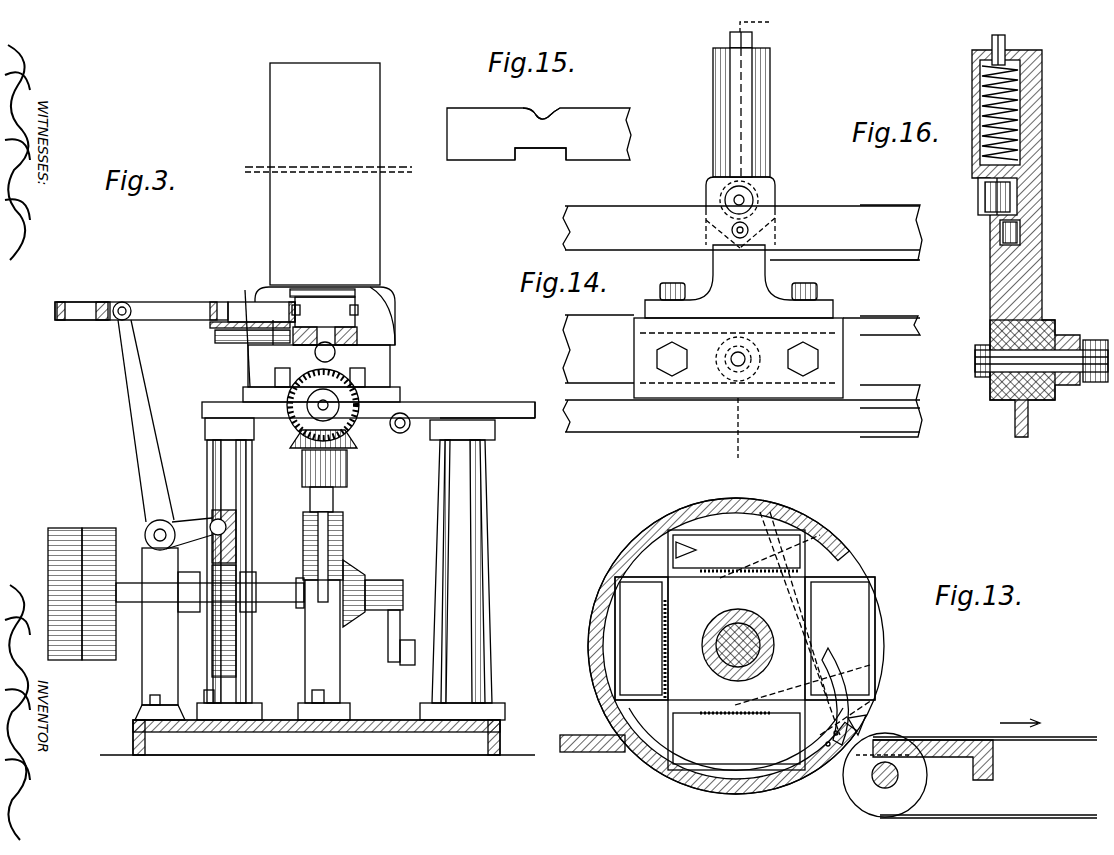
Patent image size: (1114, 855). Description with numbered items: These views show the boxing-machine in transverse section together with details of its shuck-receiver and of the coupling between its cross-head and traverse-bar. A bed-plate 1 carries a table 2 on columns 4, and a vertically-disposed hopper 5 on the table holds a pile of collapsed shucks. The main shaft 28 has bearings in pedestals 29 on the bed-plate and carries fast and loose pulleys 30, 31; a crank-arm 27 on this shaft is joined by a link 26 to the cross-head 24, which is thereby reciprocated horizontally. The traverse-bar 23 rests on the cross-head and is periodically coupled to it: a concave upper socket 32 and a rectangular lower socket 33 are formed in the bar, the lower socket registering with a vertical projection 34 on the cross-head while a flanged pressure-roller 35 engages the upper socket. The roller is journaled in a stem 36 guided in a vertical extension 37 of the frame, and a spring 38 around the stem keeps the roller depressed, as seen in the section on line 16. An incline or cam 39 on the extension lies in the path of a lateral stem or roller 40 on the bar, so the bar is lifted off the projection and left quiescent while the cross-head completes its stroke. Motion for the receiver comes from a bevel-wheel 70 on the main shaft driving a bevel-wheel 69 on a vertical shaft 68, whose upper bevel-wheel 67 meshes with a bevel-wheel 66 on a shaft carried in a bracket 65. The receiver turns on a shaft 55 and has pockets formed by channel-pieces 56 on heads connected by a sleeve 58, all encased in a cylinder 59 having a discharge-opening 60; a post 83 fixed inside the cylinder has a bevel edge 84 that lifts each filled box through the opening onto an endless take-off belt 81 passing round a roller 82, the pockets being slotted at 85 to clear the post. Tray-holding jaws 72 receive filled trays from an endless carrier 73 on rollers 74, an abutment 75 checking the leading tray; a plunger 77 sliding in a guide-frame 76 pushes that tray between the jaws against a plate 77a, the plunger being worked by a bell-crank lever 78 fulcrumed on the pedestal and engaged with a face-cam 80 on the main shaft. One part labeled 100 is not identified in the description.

In FIG. 3, the bed-plate 1 is at (365, 748).
In FIG. 3, the table 2 is at (430, 412).
In FIG. 13, the table 2 is at (592, 752).
In FIG. 3, the columns 4 is at (218, 466).
In FIG. 3, the hopper 5 is at (328, 174).
In FIG. 14, the shaft 16 is at (760, 247).
In FIG. 15, the traverse-bar 23 is at (539, 134).
In FIG. 14, the traverse-bar 23 is at (566, 228).
In FIG. 16, the traverse-bar 23 is at (891, 321).
In FIG. 14, the cross-head 24 is at (634, 358).
In FIG. 3, the link 26 is at (408, 645).
In FIG. 3, the crank-arm 27 is at (388, 645).
In FIG. 3, the main shaft 28 is at (282, 606).
In FIG. 3, the pedestals 29 is at (152, 682).
In FIG. 3, the fast pulley 30 is at (62, 528).
In FIG. 3, the loose pulley 31 is at (100, 528).
In FIG. 15, the upper socket 32 is at (542, 112).
In FIG. 14, the upper socket 32 is at (706, 212).
In FIG. 15, the lower socket 33 is at (532, 150).
In FIG. 14, the lower socket 33 is at (739, 281).
In FIG. 14, the vertical projection 34 is at (760, 244).
In FIG. 14, the flanged pressure-roller 35 is at (724, 200).
In FIG. 16, the flanged pressure-roller 35 is at (985, 195).
In FIG. 14, the stem 36 is at (730, 40).
In FIG. 16, the stem 36 is at (992, 42).
In FIG. 14, the vertical extension 37 is at (770, 120).
In FIG. 16, the vertical extension 37 is at (1000, 288).
In FIG. 16, the spring 38 is at (980, 90).
In FIG. 14, the incline or cam 39 is at (713, 250).
In FIG. 16, the incline or cam 39 is at (990, 257).
In FIG. 14, the lateral stem or roller 40 is at (758, 220).
In FIG. 16, the lateral stem or roller 40 is at (1020, 232).
In FIG. 3, the shaft 55 is at (333, 359).
In FIG. 13, the shaft 55 is at (722, 666).
In FIG. 13, the channel-piece 56 is at (668, 604).
In FIG. 13, the sleeve 58 is at (762, 628).
In FIG. 13, the cylinder 59 is at (588, 605).
In FIG. 13, the discharge-opening 60 is at (860, 585).
In FIG. 3, the bracket 65 is at (300, 362).
In FIG. 3, the bevel-wheel 66 is at (345, 430).
In FIG. 3, the bevel-wheel 67 is at (352, 448).
In FIG. 3, the vertical shaft 68 is at (334, 498).
In FIG. 3, the bevel-wheel 69 is at (345, 560).
In FIG. 3, the bevel-wheel 70 is at (368, 572).
In FIG. 3, the tray holding and releasing jaws 72 is at (325, 312).
In FIG. 3, the endless carrier 73 is at (226, 318).
In FIG. 3, the rollers 74 is at (215, 335).
In FIG. 3, the abutment 75 is at (246, 300).
In FIG. 3, the guide-frame 76 is at (56, 312).
In FIG. 3, the reciprocating plunger 77 is at (168, 305).
In FIG. 3, the plate 77a is at (382, 330).
In FIG. 3, the bell-crank lever 78 is at (135, 430).
In FIG. 3, the face-cam 80 is at (238, 525).
In FIG. 3, the endless take-off belt 81 is at (500, 412).
In FIG. 13, the endless take-off belt 81 is at (1066, 736).
In FIG. 13, the roller 82 is at (858, 790).
In FIG. 13, the post 83 is at (860, 692).
In FIG. 13, the bevel edge 84 is at (850, 665).
In FIG. 13, the slots 85 is at (665, 588).
In FIG. 3, the plate 100 is at (325, 290).